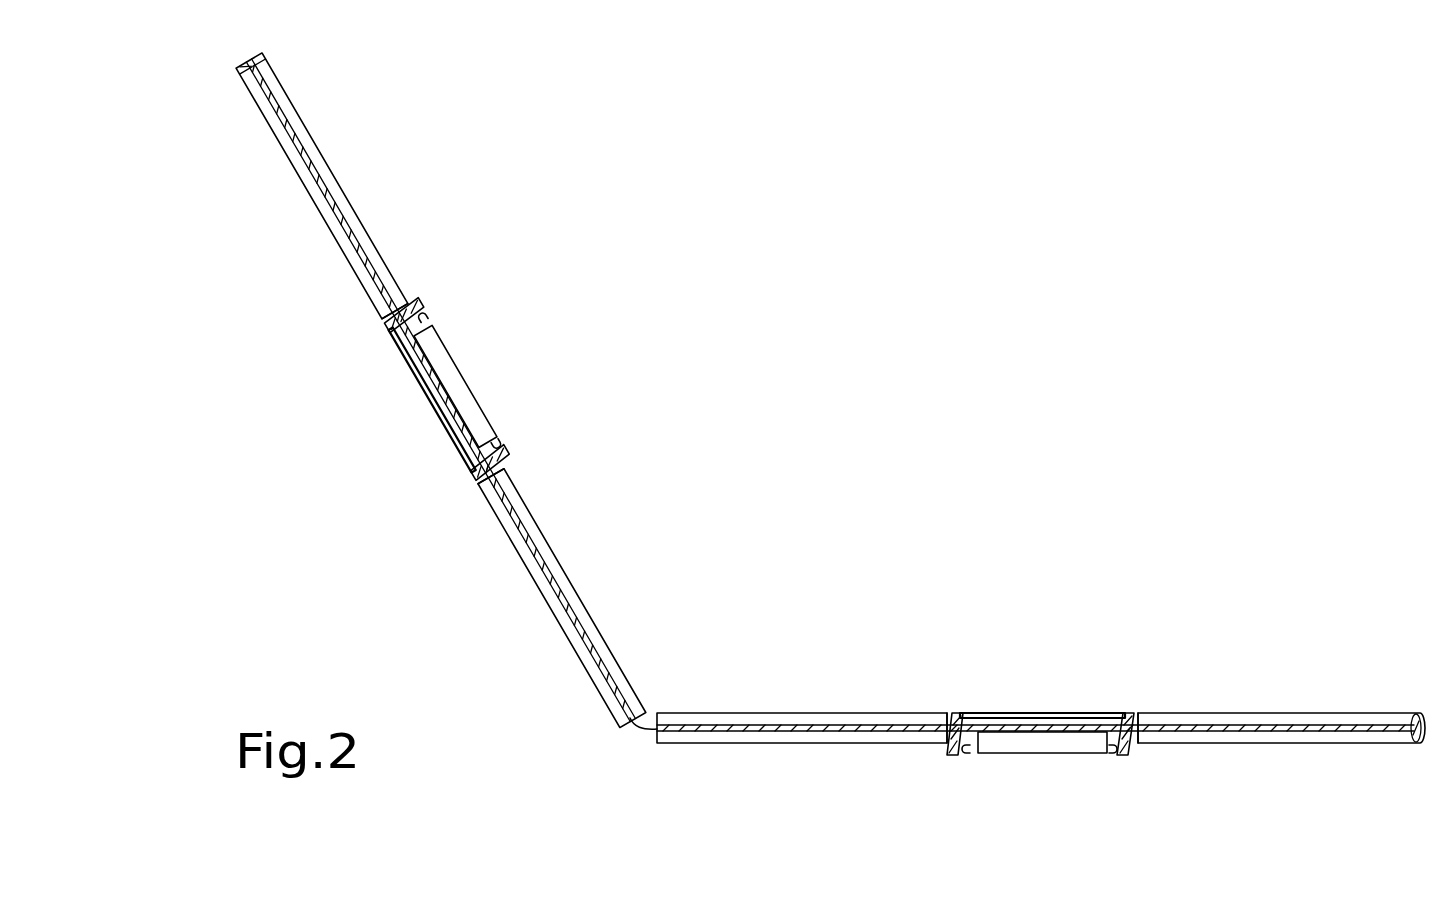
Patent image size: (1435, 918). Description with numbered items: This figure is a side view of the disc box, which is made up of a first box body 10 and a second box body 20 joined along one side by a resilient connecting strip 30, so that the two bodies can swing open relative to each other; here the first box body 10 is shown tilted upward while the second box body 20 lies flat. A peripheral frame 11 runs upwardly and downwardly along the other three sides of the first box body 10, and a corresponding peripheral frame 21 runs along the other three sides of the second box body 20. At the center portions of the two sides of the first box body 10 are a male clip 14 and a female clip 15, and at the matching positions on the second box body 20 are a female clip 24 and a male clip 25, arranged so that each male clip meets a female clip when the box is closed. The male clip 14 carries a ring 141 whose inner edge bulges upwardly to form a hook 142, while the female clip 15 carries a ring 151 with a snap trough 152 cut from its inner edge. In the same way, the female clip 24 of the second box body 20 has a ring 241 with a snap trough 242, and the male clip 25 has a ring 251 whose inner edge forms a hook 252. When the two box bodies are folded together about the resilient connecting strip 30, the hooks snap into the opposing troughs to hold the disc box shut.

The first box body 10 is at (317, 144).
The peripheral frame 11 is at (237, 67).
The male clip 14 is at (405, 322).
The ring 141 is at (400, 306).
The hook 142 is at (497, 455).
The female clip 15 is at (383, 325).
The ring 151 is at (380, 314).
The snap trough 152 is at (478, 461).
The resilient connecting strip 30 is at (641, 729).
The second box body 20 is at (1261, 712).
The peripheral frame 21 is at (1421, 716).
The female clip 24 is at (1128, 713).
The ring 241 is at (947, 713).
The snap trough 242 is at (963, 713).
The male clip 25 is at (1130, 745).
The ring 251 is at (955, 740).
The hook 252 is at (975, 748).